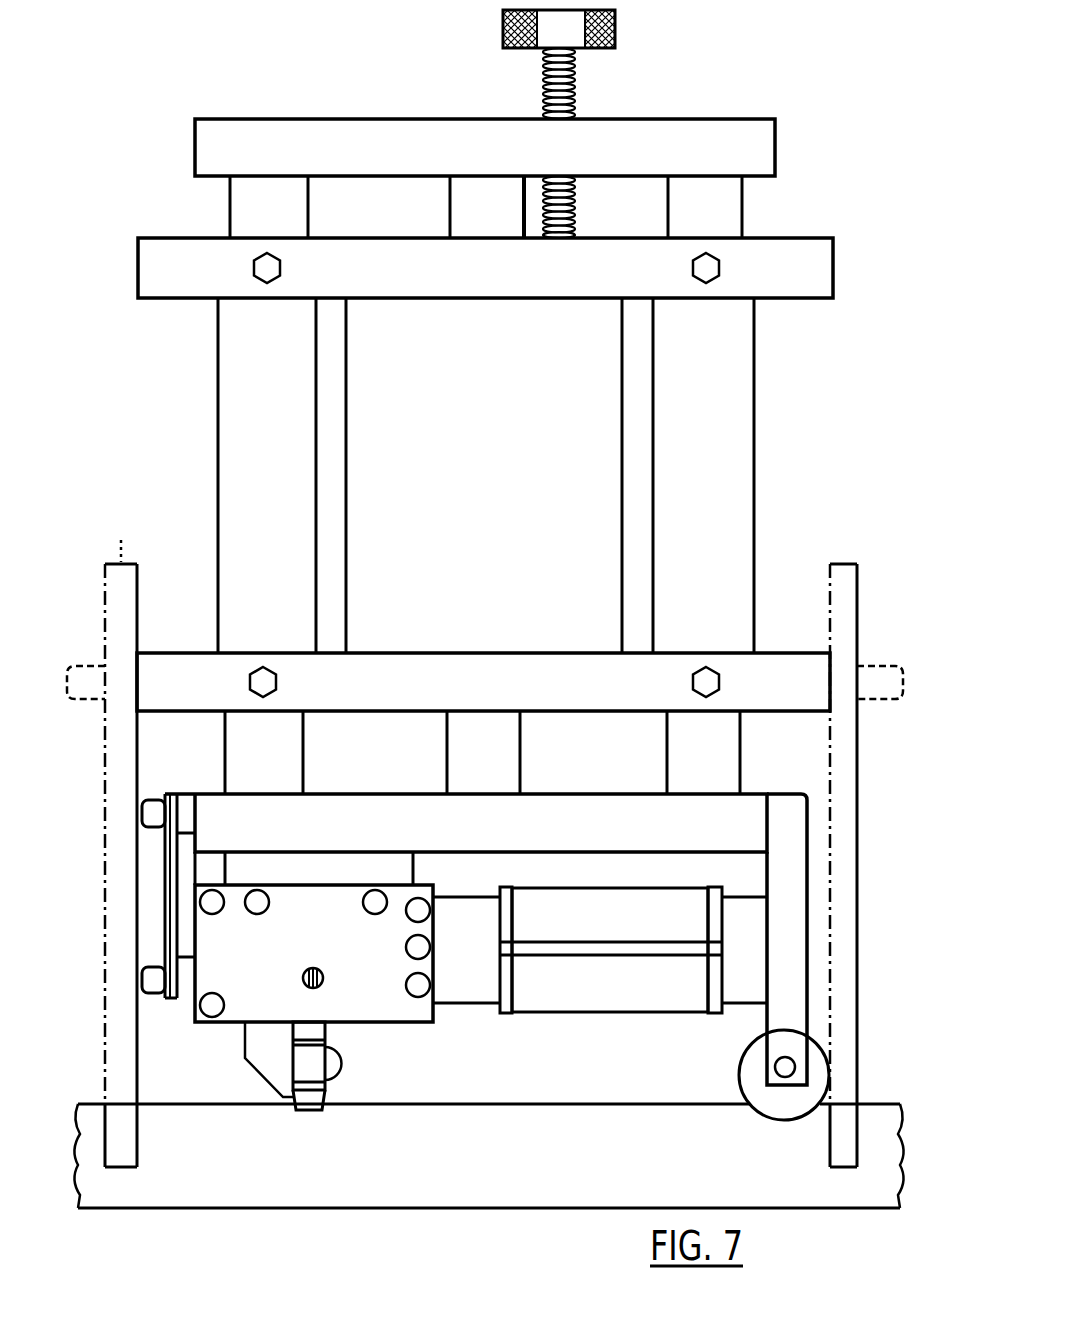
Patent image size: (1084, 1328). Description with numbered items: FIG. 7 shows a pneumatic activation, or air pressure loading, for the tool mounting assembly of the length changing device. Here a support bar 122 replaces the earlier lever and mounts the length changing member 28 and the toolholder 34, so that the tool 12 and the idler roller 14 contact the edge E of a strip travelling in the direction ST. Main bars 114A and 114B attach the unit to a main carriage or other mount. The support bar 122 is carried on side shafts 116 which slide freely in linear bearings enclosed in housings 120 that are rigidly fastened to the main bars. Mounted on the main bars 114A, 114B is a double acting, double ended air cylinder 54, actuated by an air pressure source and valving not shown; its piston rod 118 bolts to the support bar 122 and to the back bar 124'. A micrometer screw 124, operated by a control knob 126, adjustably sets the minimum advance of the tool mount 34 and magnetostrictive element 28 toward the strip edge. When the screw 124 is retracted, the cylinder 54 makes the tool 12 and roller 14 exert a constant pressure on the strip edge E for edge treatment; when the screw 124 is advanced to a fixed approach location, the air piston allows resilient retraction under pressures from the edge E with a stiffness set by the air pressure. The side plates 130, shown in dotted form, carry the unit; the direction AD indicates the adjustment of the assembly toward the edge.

The control knob 126 is at (615, 30).
The micrometer screw 124 is at (605, 144).
The back bar 124' is at (485, 116).
The piston rod 118 is at (460, 207).
The main bar 114B is at (520, 268).
The housing 120 is at (227, 389).
The double acting double ended air cylinder 54 is at (512, 539).
The main bar 114A is at (787, 662).
The side shaft 116 is at (290, 758).
The support bar 122 is at (490, 838).
The toolholder 34 is at (405, 1033).
The length changing member 28 is at (652, 1024).
The idler roller 14 is at (775, 1107).
The tool 12 is at (312, 1112).
The side plate 130 is at (887, 998).
The strip edge E is at (540, 1100).
The strip travel direction ST is at (452, 1145).
The adjustment direction arrow AD is at (348, 1030).